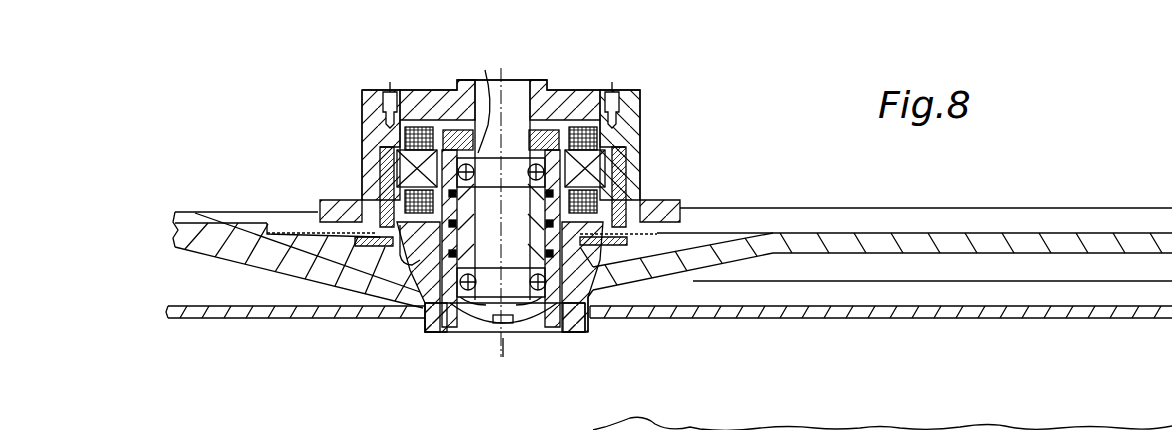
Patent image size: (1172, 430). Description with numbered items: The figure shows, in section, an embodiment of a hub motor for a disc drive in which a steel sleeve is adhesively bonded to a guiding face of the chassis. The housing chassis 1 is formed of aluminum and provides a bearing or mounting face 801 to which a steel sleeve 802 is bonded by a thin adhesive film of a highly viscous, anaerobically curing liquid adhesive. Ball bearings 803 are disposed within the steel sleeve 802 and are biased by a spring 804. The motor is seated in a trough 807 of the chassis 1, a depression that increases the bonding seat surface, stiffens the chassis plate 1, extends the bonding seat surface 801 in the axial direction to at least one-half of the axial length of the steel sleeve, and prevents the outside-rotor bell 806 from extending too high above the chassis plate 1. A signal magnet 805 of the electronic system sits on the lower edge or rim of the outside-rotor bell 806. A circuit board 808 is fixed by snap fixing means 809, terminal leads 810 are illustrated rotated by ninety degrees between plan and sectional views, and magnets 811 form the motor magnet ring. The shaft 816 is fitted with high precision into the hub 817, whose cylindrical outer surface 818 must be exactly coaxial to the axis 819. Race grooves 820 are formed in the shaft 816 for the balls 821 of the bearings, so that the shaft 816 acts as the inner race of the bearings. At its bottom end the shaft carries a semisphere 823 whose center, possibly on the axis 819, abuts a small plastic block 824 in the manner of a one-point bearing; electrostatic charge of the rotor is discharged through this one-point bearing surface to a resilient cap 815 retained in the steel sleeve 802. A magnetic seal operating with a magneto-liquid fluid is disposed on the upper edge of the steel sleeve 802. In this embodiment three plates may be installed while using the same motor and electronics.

The housing chassis 1 is at (1010, 243).
The bearing or mounting face 801 is at (582, 326).
The steel sleeve 802 is at (562, 330).
The ball bearings 803 is at (617, 141).
The spring 804 is at (521, 335).
The signal magnet 805 is at (628, 200).
The outside-rotor bell 806 is at (640, 73).
The trough 807 is at (680, 258).
The circuit board 808 is at (660, 237).
The snap fixing means 809 is at (433, 218).
The terminal leads 810 is at (267, 230).
The magnets 811 is at (380, 177).
The resilient cap 815 is at (545, 332).
The shaft 816 is at (513, 107).
The hub 817 is at (420, 100).
The cylindrical outer surface 818 is at (362, 118).
The axis 819 is at (502, 72).
The race grooves 820 is at (527, 303).
The balls 821 is at (478, 102).
The semisphere 823 is at (488, 312).
The plastic block 824 is at (497, 336).